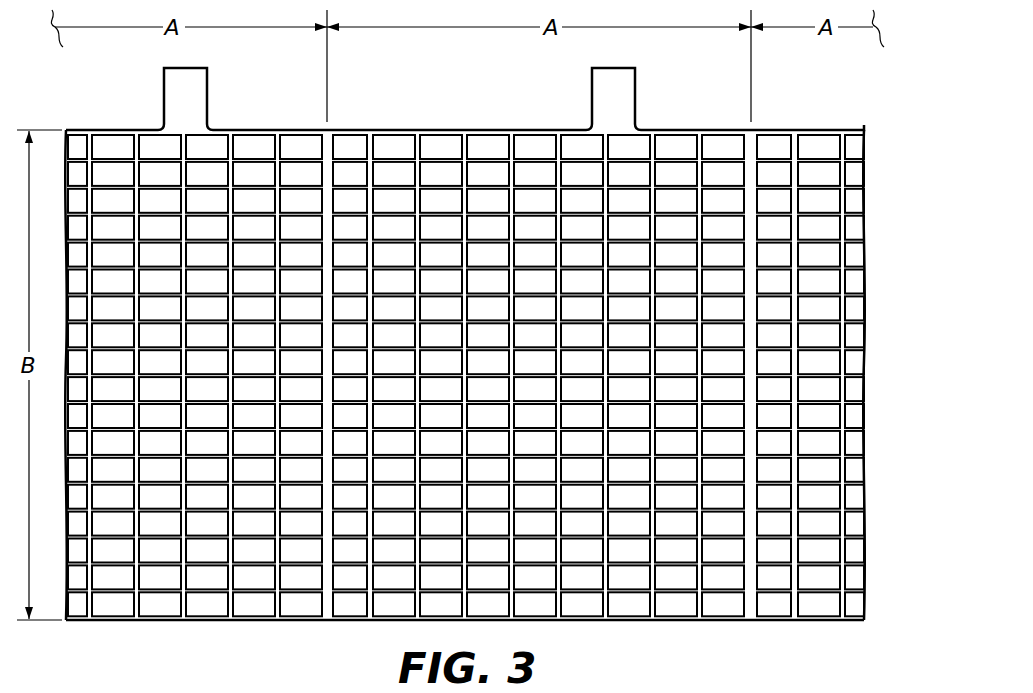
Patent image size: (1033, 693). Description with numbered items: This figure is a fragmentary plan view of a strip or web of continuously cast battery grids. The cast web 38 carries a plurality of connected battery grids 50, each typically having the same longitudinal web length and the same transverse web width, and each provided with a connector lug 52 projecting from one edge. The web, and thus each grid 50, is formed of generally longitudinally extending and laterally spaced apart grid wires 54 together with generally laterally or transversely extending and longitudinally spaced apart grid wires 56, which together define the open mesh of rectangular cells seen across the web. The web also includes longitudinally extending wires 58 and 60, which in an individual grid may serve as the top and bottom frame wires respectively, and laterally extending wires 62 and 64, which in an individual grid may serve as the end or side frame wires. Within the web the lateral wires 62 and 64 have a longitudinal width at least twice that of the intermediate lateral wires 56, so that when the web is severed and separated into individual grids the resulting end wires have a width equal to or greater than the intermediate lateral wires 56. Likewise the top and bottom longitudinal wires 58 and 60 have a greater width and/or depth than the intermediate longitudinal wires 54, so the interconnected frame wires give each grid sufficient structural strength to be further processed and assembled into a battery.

The cast web 38 is at (278, 627).
The battery grid 50 is at (90, 622).
The connector lug 52 is at (164, 93).
The longitudinally extending grid wire 54 is at (857, 297).
The laterally extending grid wire 56 is at (90, 603).
The top frame wire 58 is at (437, 130).
The bottom frame wire 60 is at (722, 623).
The lateral frame wire 62 is at (757, 605).
The lateral frame wire 64 is at (336, 607).